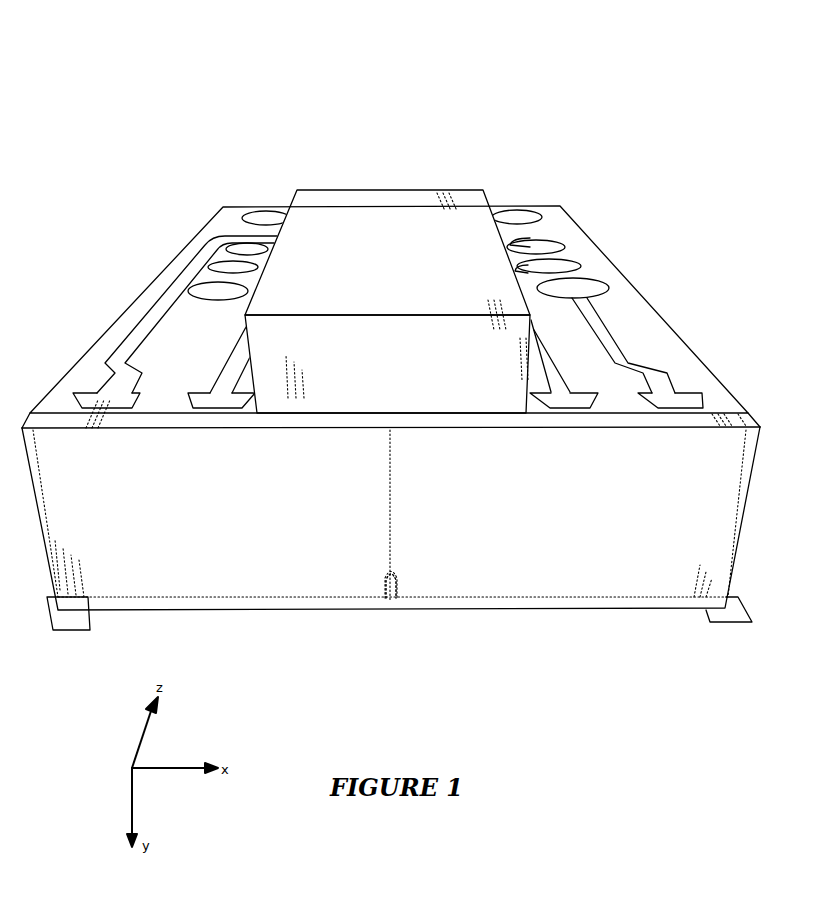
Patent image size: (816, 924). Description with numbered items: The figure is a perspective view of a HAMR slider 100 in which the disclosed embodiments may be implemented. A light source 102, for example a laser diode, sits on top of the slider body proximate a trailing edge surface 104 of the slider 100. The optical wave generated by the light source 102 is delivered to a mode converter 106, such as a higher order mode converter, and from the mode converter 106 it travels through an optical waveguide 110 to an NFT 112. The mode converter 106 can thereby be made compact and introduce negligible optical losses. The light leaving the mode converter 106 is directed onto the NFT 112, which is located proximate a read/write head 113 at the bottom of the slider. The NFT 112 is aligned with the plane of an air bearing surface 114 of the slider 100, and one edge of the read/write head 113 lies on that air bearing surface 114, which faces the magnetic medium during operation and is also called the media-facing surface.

The HAMR slider 100 is at (551, 96).
The light source 102 is at (401, 207).
The trailing edge surface 104 is at (70, 631).
The mode converter 106 is at (389, 603).
The optical waveguide 110 is at (391, 513).
The NFT 112 is at (389, 603).
The read/write head 113 is at (397, 603).
The air bearing surface 114 is at (708, 623).